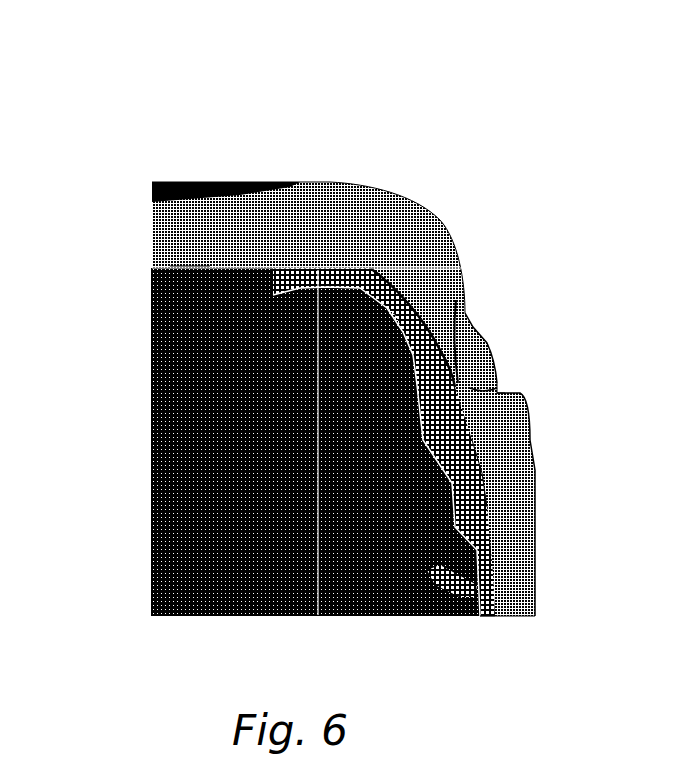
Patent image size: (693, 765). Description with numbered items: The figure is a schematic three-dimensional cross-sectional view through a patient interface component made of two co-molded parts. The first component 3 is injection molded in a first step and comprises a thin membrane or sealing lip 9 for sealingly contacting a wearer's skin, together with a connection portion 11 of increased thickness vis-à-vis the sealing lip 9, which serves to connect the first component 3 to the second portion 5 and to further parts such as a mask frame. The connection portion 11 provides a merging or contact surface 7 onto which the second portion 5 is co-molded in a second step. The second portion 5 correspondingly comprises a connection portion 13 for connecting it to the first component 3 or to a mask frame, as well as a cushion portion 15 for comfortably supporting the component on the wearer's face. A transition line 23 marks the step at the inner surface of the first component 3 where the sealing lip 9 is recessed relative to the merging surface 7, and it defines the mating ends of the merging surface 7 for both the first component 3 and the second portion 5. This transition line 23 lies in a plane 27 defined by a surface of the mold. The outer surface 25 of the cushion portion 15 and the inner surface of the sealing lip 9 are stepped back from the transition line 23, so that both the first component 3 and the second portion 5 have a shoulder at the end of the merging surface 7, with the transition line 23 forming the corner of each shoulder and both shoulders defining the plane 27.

The first component 3 is at (490, 336).
The second portion 5 is at (150, 452).
The merging or contact surface 7 is at (490, 535).
The thin membrane or sealing lip 9 is at (275, 181).
The connection portion 11 is at (524, 545).
The connection portion 13 is at (483, 472).
The cushion portion 15 is at (367, 270).
The transition line 23 is at (500, 385).
The outer surface of the cushion portion 25 is at (188, 262).
The plane 27 is at (460, 310).